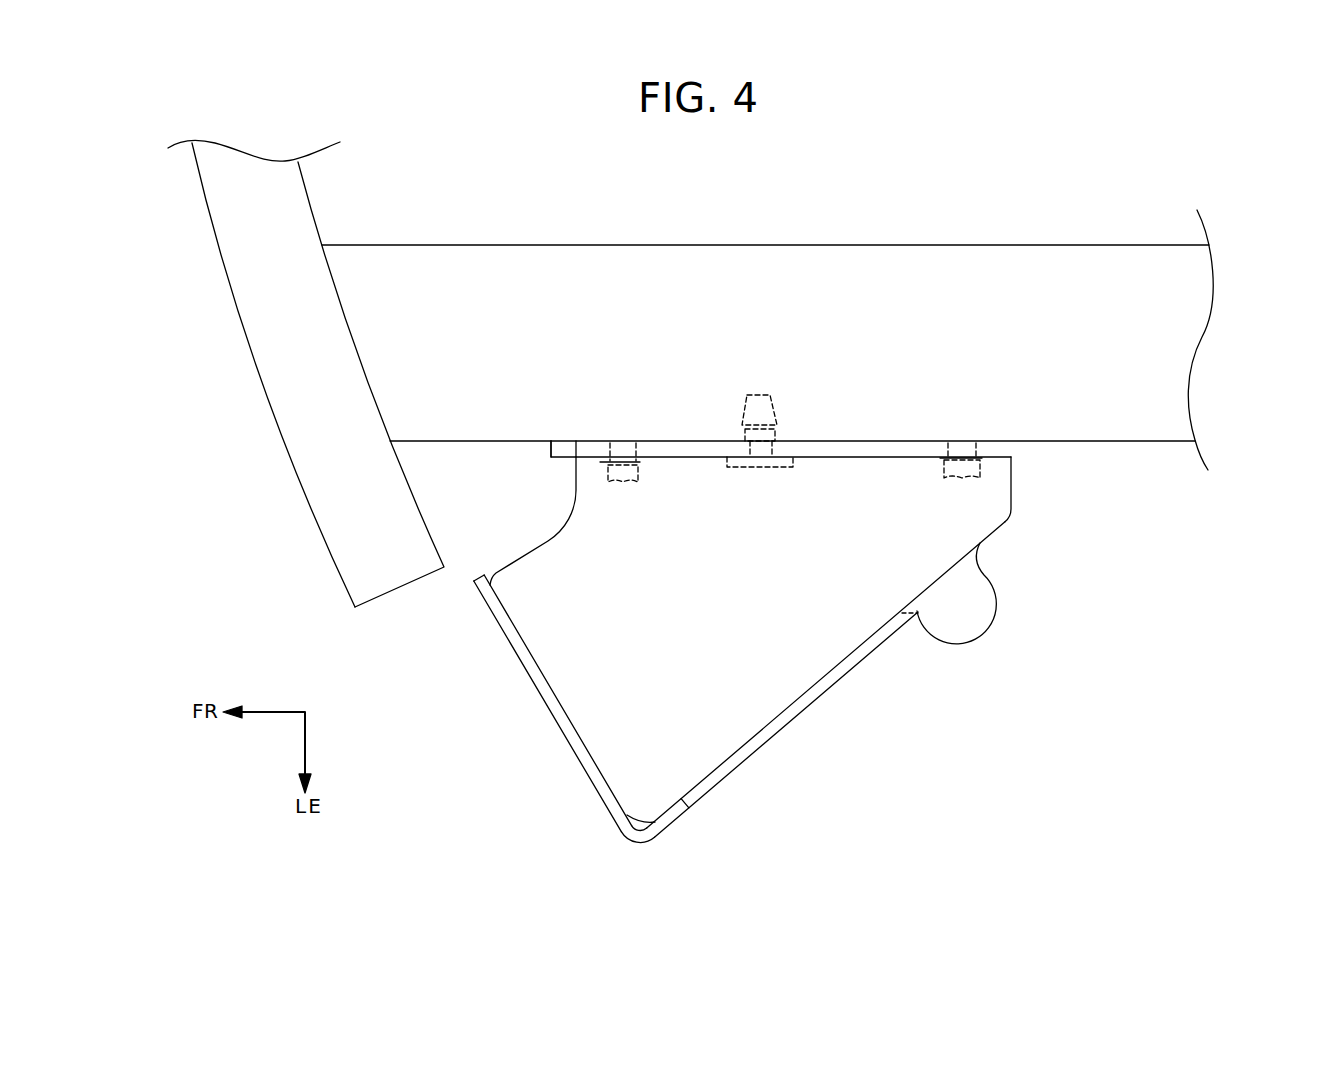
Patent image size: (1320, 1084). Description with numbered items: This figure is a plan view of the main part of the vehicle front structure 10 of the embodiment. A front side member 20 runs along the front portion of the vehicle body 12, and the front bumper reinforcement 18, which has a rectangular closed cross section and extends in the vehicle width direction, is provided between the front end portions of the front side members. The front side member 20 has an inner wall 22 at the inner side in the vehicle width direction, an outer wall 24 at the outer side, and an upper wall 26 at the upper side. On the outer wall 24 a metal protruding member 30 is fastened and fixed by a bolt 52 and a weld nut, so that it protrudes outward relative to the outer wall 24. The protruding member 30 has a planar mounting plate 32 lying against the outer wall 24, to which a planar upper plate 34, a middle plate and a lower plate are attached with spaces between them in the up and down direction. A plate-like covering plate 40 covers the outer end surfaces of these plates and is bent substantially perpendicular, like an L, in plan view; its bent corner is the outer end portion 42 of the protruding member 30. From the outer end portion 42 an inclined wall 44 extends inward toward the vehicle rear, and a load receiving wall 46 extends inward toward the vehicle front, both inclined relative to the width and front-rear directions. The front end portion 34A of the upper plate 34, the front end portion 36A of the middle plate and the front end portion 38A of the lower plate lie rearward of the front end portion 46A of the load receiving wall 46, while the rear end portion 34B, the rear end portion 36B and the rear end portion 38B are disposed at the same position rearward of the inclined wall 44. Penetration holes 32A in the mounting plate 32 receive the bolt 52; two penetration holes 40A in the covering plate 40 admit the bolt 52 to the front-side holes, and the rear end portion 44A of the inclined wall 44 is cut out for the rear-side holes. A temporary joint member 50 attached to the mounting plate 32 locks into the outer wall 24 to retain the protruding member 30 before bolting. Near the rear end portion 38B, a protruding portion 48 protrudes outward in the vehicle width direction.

The vehicle front structure 10 is at (781, 617).
The vehicle body 12 is at (306, 373).
The front bumper reinforcement 18 is at (247, 331).
The front side member 20 is at (790, 341).
The inner wall 22 is at (548, 245).
The outer wall 24 is at (1112, 443).
The upper wall 26 is at (1188, 352).
The protruding member 30 is at (781, 617).
The mounting plate 32 is at (781, 425).
The penetration hole 32A is at (622, 455).
The upper plate 34 is at (822, 594).
The front end portion of upper plate 34A is at (564, 467).
The rear end portion of upper plate 34B is at (1053, 458).
The front end portion of middle plate 36A is at (570, 493).
The rear end portion of middle plate 36B is at (1053, 458).
The front end portion of lower plate 38A is at (565, 470).
The rear end portion of lower plate 38B is at (1005, 462).
The covering plate 40 is at (700, 695).
The penetration hole 40A is at (562, 738).
The outer end portion 42 is at (644, 845).
The inclined wall 44 is at (826, 680).
The rear end portion of covering plate 44A is at (919, 614).
The load receiving wall 46 is at (514, 703).
The front end portion of load receiving wall 46A is at (472, 582).
The protruding portion 48 is at (985, 603).
The temporary joint member 50 is at (755, 468).
The bolt 52 is at (618, 482).